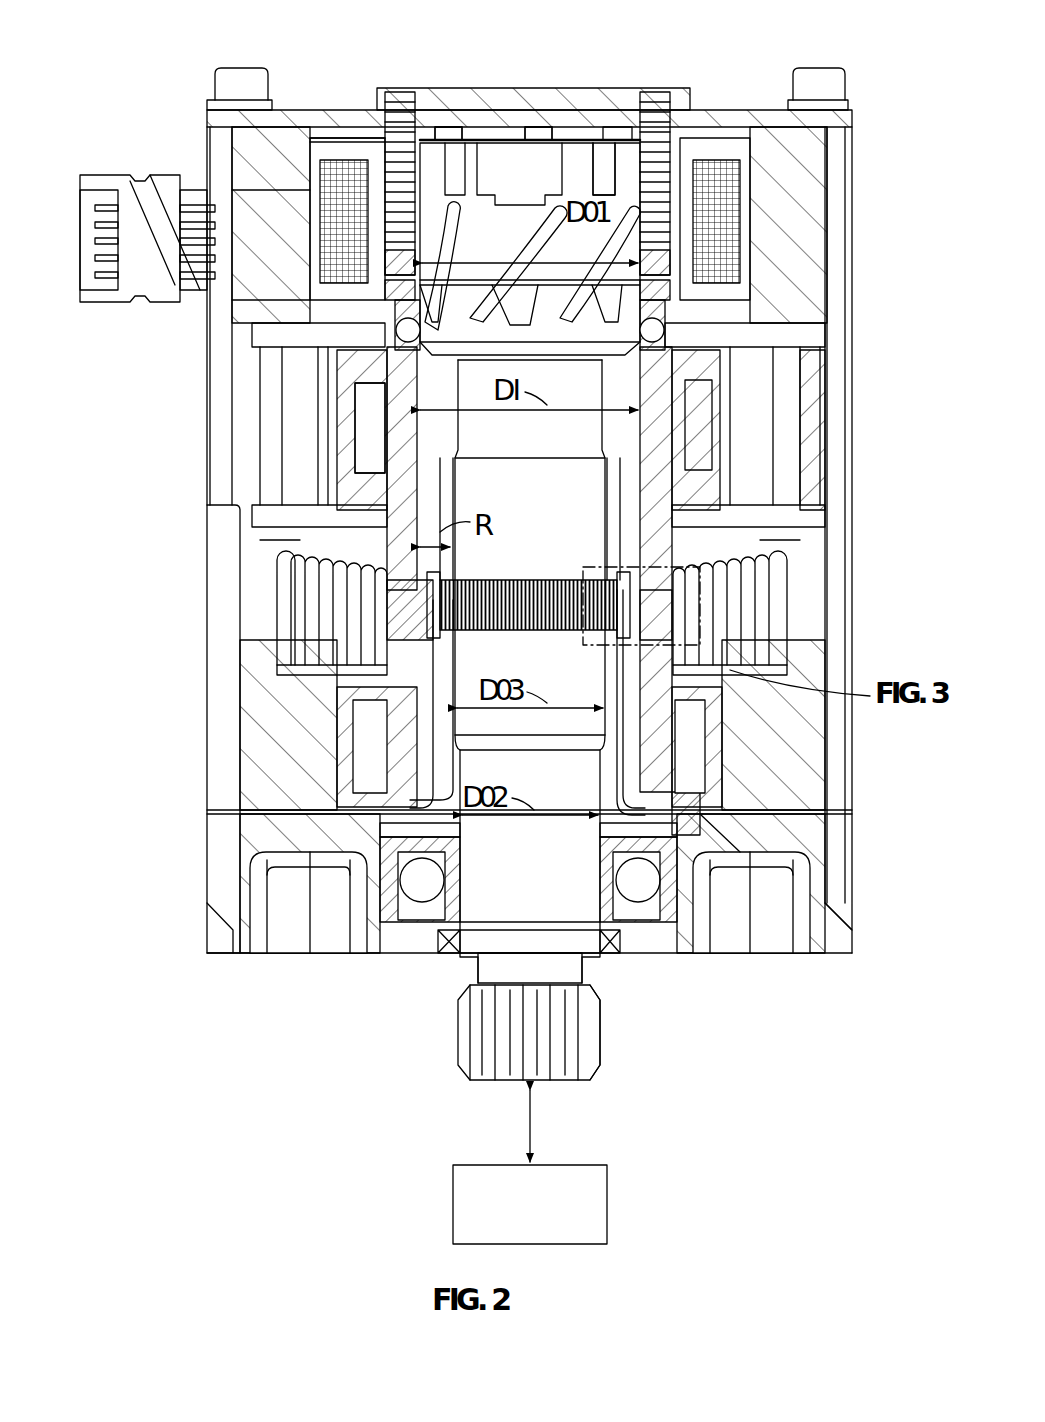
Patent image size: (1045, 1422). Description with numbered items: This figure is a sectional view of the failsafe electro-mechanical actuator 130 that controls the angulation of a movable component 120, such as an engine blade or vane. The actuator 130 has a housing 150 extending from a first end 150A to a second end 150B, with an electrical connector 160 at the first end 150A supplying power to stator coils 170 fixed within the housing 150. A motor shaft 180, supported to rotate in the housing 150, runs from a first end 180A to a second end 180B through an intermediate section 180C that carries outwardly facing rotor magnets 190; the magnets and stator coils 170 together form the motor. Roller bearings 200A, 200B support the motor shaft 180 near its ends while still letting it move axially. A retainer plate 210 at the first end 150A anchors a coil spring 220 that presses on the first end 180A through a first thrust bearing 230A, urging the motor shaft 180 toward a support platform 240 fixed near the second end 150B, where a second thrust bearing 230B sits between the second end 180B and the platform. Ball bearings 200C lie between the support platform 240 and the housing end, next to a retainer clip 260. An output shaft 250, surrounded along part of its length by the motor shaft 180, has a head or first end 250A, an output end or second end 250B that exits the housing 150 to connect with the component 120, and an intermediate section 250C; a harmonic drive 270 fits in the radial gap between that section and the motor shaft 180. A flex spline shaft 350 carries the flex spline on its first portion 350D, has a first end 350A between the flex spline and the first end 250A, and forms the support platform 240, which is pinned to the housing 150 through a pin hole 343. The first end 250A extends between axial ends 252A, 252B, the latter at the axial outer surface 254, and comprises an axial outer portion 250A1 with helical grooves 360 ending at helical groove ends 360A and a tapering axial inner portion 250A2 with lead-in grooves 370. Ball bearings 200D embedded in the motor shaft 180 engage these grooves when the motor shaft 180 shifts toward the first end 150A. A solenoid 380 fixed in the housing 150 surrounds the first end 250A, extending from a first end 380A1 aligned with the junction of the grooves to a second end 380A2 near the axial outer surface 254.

The movable component 120 is at (453, 1215).
The actuator 130 is at (680, 958).
The housing 150 is at (792, 958).
The first end of housing 150A is at (846, 94).
The second end of housing 150B is at (830, 955).
The electrical connector 160 is at (80, 225).
The stator coils 170 is at (362, 590).
The motor shaft 180 is at (665, 525).
The first end of motor shaft 180A is at (748, 330).
The second end of motor shaft 180B is at (700, 835).
The intermediate section of motor shaft 180C is at (660, 605).
The rotor magnets 190 is at (390, 612).
The roller bearing 200A is at (688, 765).
The roller bearing 200B is at (690, 458).
The ball bearings 200C is at (660, 925).
The ball bearings 200D is at (735, 390).
The retainer plate 210 is at (490, 146).
The coil spring 220 is at (660, 125).
The first thrust bearing 230A is at (688, 200).
The second thrust bearing 230B is at (348, 822).
The support platform 240 is at (310, 820).
The output shaft 250 is at (462, 1058).
The first end of output shaft 250A is at (562, 143).
The axial outer portion 250A1 is at (292, 210).
The axial inner portion 250A2 is at (330, 165).
The second end of output shaft 250B is at (586, 1068).
The intermediate section of output shaft 250C is at (385, 492).
The first end of first end 252A is at (390, 435).
The second end of first end 252B is at (582, 143).
The axial outer surface 254 is at (448, 127).
The retainer clip 260 is at (428, 912).
The harmonic drive 270 is at (352, 556).
The pin hole 343 is at (720, 822).
The flex spline shaft 350 is at (385, 672).
The first end of flex spline shaft 350A is at (380, 470).
The first portion of flex spline shaft 350D is at (370, 548).
The helical grooves 360 is at (342, 150).
The helical groove ends 360A is at (414, 200).
The lead-in grooves 370 is at (690, 350).
The solenoid 380 is at (722, 238).
The first end of solenoid 380A1 is at (285, 300).
The second end of solenoid 380A2 is at (427, 213).